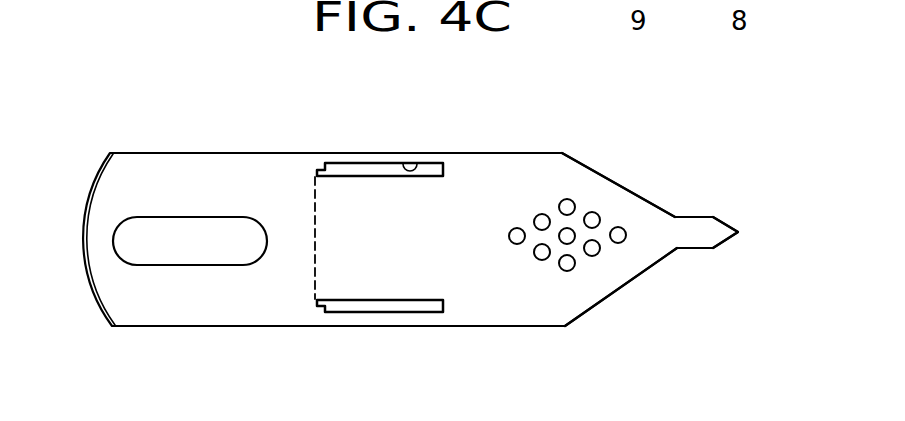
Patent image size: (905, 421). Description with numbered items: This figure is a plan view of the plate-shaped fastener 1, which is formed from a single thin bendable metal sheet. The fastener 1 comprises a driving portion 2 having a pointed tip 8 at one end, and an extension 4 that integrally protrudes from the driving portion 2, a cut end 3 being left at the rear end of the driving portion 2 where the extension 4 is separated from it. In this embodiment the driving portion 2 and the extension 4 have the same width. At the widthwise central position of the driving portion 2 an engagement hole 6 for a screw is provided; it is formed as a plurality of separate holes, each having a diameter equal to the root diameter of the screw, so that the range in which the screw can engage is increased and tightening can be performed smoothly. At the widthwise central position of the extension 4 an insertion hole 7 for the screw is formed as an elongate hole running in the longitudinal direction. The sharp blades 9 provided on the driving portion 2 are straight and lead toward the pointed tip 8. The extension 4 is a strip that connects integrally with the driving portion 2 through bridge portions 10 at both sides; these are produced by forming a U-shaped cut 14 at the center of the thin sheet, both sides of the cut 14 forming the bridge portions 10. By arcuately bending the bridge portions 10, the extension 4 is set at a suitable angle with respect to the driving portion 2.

The plate-shaped fastener 1 is at (156, 151).
The driving portion 2 is at (492, 283).
The cut end 3 is at (312, 252).
The extension 4 is at (183, 303).
The engagement hole 6 is at (618, 243).
The insertion hole 7 is at (187, 217).
The pointed tip 8 is at (738, 230).
The sharp blades 9 is at (627, 189).
The bridge portions 10 is at (363, 154).
The cut 14 is at (414, 162).